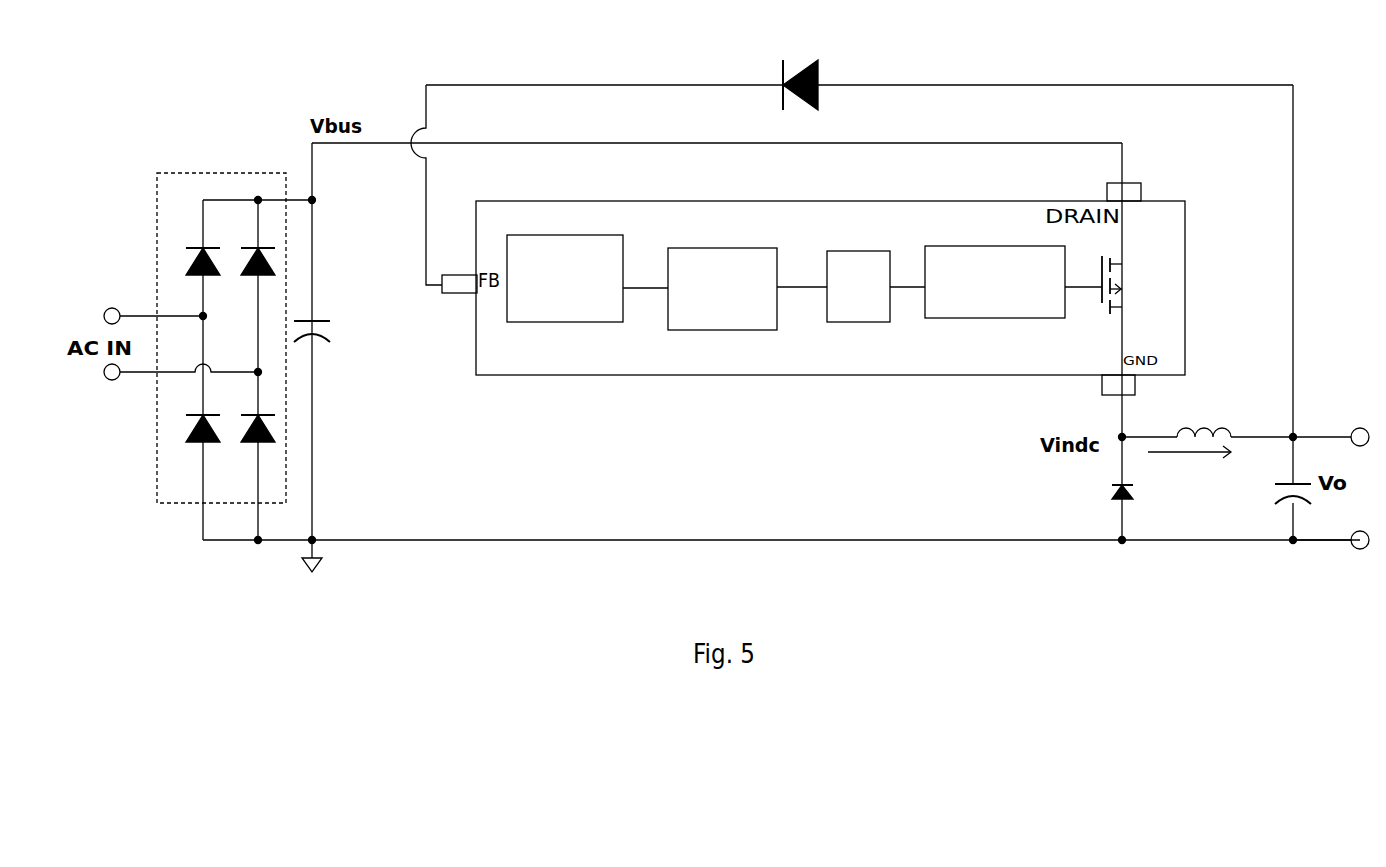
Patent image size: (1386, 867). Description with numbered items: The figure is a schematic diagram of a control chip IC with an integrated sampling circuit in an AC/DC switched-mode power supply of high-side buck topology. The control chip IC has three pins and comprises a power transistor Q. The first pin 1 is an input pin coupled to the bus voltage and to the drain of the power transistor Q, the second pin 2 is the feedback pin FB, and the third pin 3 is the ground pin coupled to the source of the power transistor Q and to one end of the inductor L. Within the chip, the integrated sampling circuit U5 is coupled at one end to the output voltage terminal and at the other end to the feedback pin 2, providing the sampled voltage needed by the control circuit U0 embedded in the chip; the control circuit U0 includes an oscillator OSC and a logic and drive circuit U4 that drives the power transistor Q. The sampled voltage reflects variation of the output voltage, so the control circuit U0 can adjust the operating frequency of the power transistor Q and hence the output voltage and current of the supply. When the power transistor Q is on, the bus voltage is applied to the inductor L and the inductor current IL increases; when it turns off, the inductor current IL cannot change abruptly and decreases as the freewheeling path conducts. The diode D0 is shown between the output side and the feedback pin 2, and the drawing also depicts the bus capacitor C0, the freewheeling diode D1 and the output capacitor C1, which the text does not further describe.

The diode D0 is at (801, 65).
The bus capacitor C0 is at (331, 335).
The control chip IC is at (830, 288).
The integrated sampling circuit U5 is at (565, 278).
The control circuit U0 is at (722, 289).
The oscillator OSC is at (858, 286).
The logic and drive circuit U4 is at (995, 282).
The power transistor Q is at (1122, 285).
The input pin 1 is at (1124, 192).
The feedback pin 2 is at (459, 284).
The ground pin 3 is at (1118, 385).
The inductor L is at (1207, 420).
The inductor current IL is at (1189, 464).
The freewheeling diode D1 is at (1103, 499).
The output capacitor C1 is at (1267, 499).